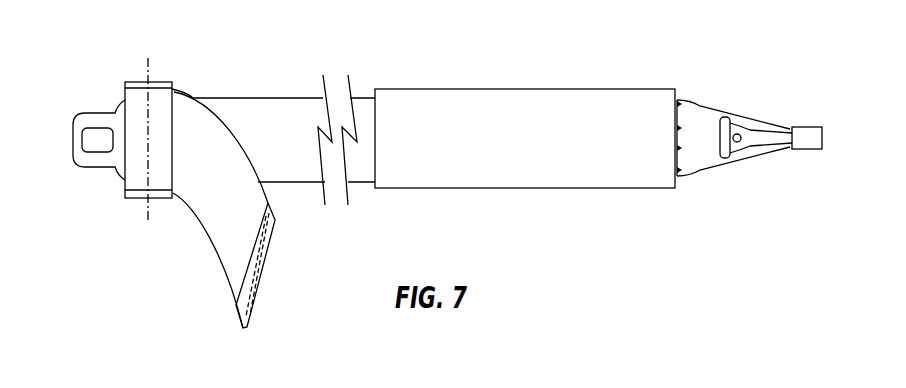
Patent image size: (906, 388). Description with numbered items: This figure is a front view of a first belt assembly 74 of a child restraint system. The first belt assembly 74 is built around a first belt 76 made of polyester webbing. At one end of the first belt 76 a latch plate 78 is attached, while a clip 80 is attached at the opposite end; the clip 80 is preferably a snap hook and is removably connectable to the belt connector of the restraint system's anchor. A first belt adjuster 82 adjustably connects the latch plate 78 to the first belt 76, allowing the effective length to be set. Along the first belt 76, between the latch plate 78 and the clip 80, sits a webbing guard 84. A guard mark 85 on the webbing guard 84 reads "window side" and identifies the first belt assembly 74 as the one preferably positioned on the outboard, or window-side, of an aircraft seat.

The first belt assembly 74 is at (534, 41).
The first belt 76 is at (212, 210).
The latch plate 78 is at (81, 169).
The clip 80 is at (749, 154).
The first belt adjuster 82 is at (175, 133).
The webbing guard 84 is at (525, 163).
The guard mark 85 is at (554, 101).